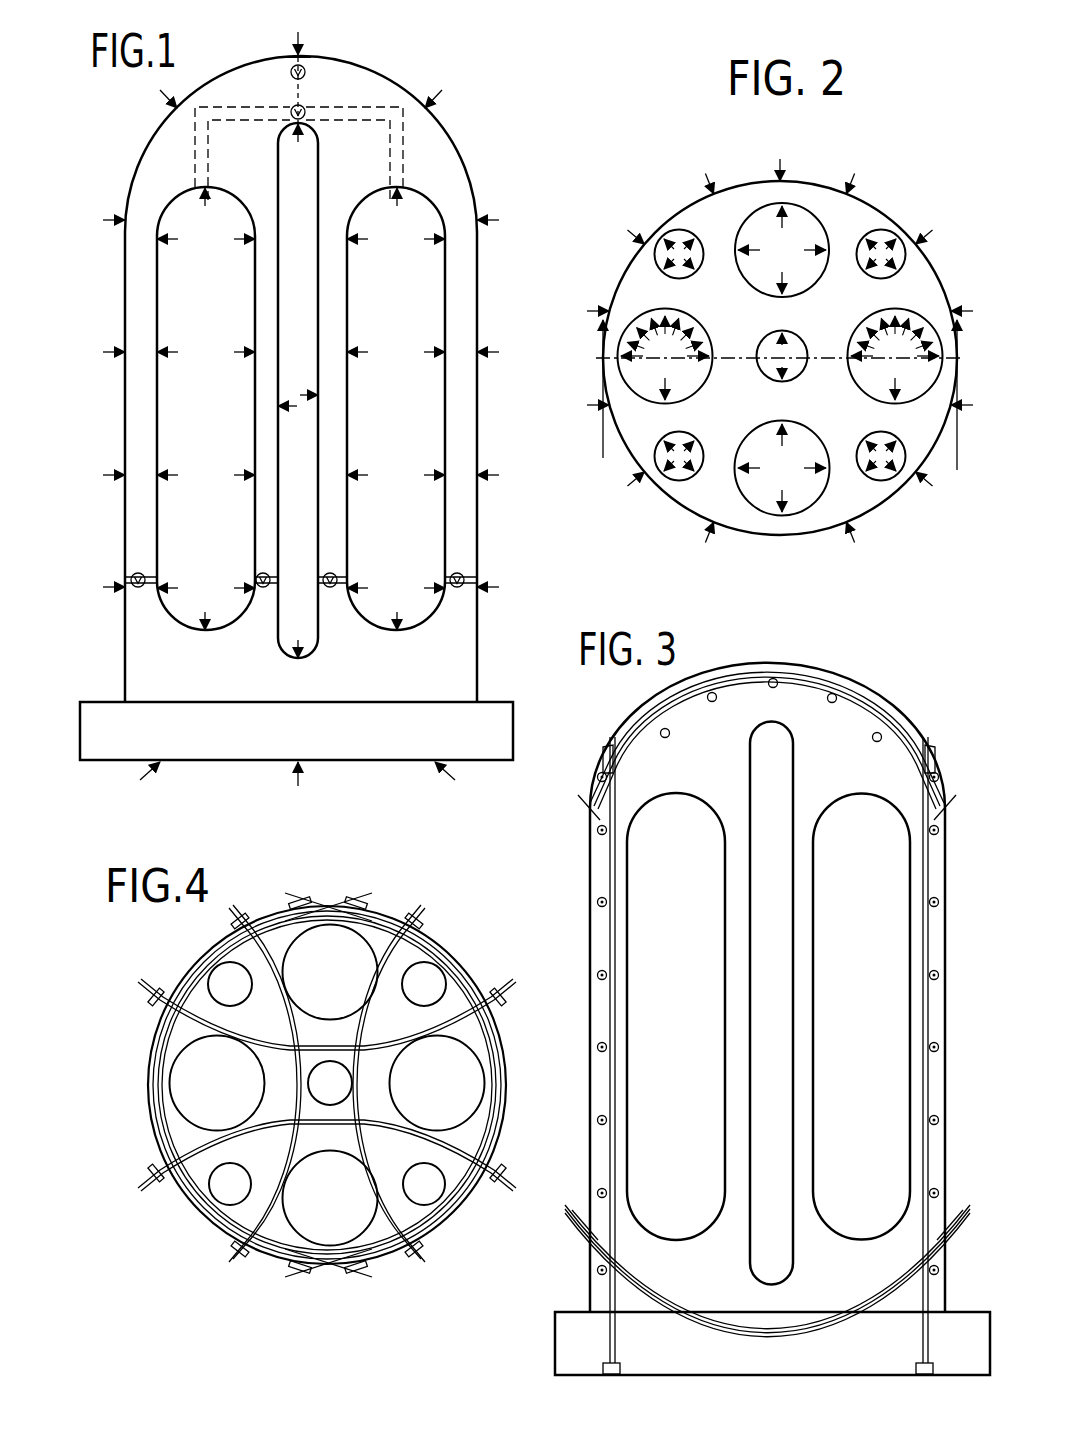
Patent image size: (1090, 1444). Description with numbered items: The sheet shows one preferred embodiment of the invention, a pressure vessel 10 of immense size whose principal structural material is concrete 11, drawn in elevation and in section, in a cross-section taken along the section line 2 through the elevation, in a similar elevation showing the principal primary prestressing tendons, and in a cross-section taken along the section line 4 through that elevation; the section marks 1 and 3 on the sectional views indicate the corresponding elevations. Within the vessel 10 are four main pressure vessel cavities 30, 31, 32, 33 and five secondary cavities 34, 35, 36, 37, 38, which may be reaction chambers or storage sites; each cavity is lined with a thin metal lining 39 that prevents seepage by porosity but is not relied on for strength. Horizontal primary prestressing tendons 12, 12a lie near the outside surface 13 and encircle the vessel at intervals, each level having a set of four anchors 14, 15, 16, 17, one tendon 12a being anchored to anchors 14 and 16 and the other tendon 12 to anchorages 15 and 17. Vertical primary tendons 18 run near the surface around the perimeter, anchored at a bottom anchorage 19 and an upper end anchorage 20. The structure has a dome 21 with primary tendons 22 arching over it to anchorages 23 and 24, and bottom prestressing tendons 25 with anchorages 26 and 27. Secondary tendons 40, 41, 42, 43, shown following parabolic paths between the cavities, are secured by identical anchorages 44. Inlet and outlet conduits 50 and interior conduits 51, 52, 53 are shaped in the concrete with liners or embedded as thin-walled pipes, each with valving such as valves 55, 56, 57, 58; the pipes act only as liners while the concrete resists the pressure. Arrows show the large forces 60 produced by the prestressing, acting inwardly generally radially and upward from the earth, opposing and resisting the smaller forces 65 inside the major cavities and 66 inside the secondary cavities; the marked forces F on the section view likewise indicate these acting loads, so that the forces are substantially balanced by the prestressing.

In FIG. 1, the pressure vessel 10 is at (452, 126).
In FIG. 2, the pressure vessel 10 is at (788, 176).
In FIG. 3, the pressure vessel 10 is at (872, 680).
In FIG. 4, the pressure vessel 10 is at (416, 880).
In FIG. 1, the concrete 11 is at (455, 172).
In FIG. 2, the concrete 11 is at (843, 209).
In FIG. 3, the concrete 11 is at (892, 720).
In FIG. 4, the concrete 11 is at (502, 1078).
In FIG. 4, the horizontal primary prestressing tendon 12 is at (380, 900).
In FIG. 4, the horizontal primary prestressing tendon 12a is at (290, 896).
In FIG. 3, the outside surface 13 is at (600, 931).
In FIG. 4, the outside surface 13 is at (150, 1068).
In FIG. 4, the anchor 14 is at (308, 898).
In FIG. 4, the anchorage 15 is at (352, 898).
In FIG. 4, the anchor 16 is at (306, 1285).
In FIG. 4, the anchorage 17 is at (349, 1285).
In FIG. 3, the vertical primary tendon 18 is at (604, 975).
In FIG. 3, the bottom anchorage 19 is at (602, 1370).
In FIG. 3, the upper end anchorage 20 is at (612, 746).
In FIG. 3, the dome 21 is at (805, 668).
In FIG. 3, the dome prestressing primary tendon 22 is at (762, 672).
In FIG. 3, the anchorage 23 is at (578, 803).
In FIG. 3, the anchorage 24 is at (940, 786).
In FIG. 3, the bottom prestressing tendon 25 is at (807, 1322).
In FIG. 3, the anchorage 26 is at (574, 1231).
In FIG. 3, the anchorage 27 is at (961, 1235).
In FIG. 2, the main pressure vessel cavity 30 is at (801, 263).
In FIG. 4, the main pressure vessel cavity 30 is at (348, 986).
In FIG. 1, the main pressure vessel cavity 31 is at (222, 437).
In FIG. 2, the main pressure vessel cavity 31 is at (672, 387).
In FIG. 3, the main pressure vessel cavity 31 is at (693, 990).
In FIG. 4, the main pressure vessel cavity 31 is at (235, 1097).
In FIG. 1, the main pressure vessel cavity 32 is at (412, 437).
In FIG. 2, the main pressure vessel cavity 32 is at (898, 387).
In FIG. 3, the main pressure vessel cavity 32 is at (880, 990).
In FIG. 4, the main pressure vessel cavity 32 is at (455, 1097).
In FIG. 2, the main pressure vessel cavity 33 is at (800, 483).
In FIG. 4, the main pressure vessel cavity 33 is at (348, 1212).
In FIG. 1, the secondary cavity 34 is at (316, 437).
In FIG. 2, the secondary cavity 34 is at (759, 372).
In FIG. 3, the secondary cavity 34 is at (789, 990).
In FIG. 4, the secondary cavity 34 is at (348, 1097).
In FIG. 2, the secondary cavity 35 is at (872, 278).
In FIG. 4, the secondary cavity 35 is at (442, 998).
In FIG. 2, the secondary cavity 36 is at (676, 279).
In FIG. 4, the secondary cavity 36 is at (248, 998).
In FIG. 2, the secondary cavity 37 is at (697, 438).
In FIG. 4, the secondary cavity 37 is at (248, 1198).
In FIG. 2, the secondary cavity 38 is at (868, 440).
In FIG. 4, the secondary cavity 38 is at (442, 1198).
In FIG. 1, the thin metal lining 39 is at (252, 535).
In FIG. 2, the thin metal lining 39 is at (788, 342).
In FIG. 3, the thin metal lining 39 is at (630, 905).
In FIG. 4, the thin metal lining 39 is at (236, 1010).
In FIG. 4, the secondary tendon 40 is at (162, 995).
In FIG. 4, the secondary tendon 41 is at (162, 1180).
In FIG. 4, the secondary tendon 42 is at (235, 905).
In FIG. 4, the secondary tendon 43 is at (420, 906).
In FIG. 4, the anchorage 44 is at (228, 922).
In FIG. 1, the inlet and outlet conduit 50 is at (150, 590).
In FIG. 1, the interior conduit 51 is at (256, 576).
In FIG. 1, the interior conduit 52 is at (337, 578).
In FIG. 1, the interior conduit 53 is at (392, 198).
In FIG. 1, the valve 55 is at (146, 578).
In FIG. 1, the valve 56 is at (256, 594).
In FIG. 1, the valve 57 is at (348, 594).
In FIG. 1, the valve 58 is at (306, 68).
In FIG. 1, the inward prestressing force 60 is at (174, 92).
In FIG. 2, the inward prestressing force 60 is at (706, 178).
In FIG. 1, the major cavity internal force 65 is at (178, 245).
In FIG. 2, the major cavity internal force 65 is at (740, 262).
In FIG. 2, the secondary cavity internal force 66 is at (798, 384).
In FIG. 2, the force F is at (776, 413).
In FIG. 2, the section line 1 is at (996, 366).
In FIG. 1, the section line 2— 2 is at (112, 392).
In FIG. 4, the section line 3 is at (112, 1088).
In FIG. 3, the section line 4— 4 is at (572, 1017).